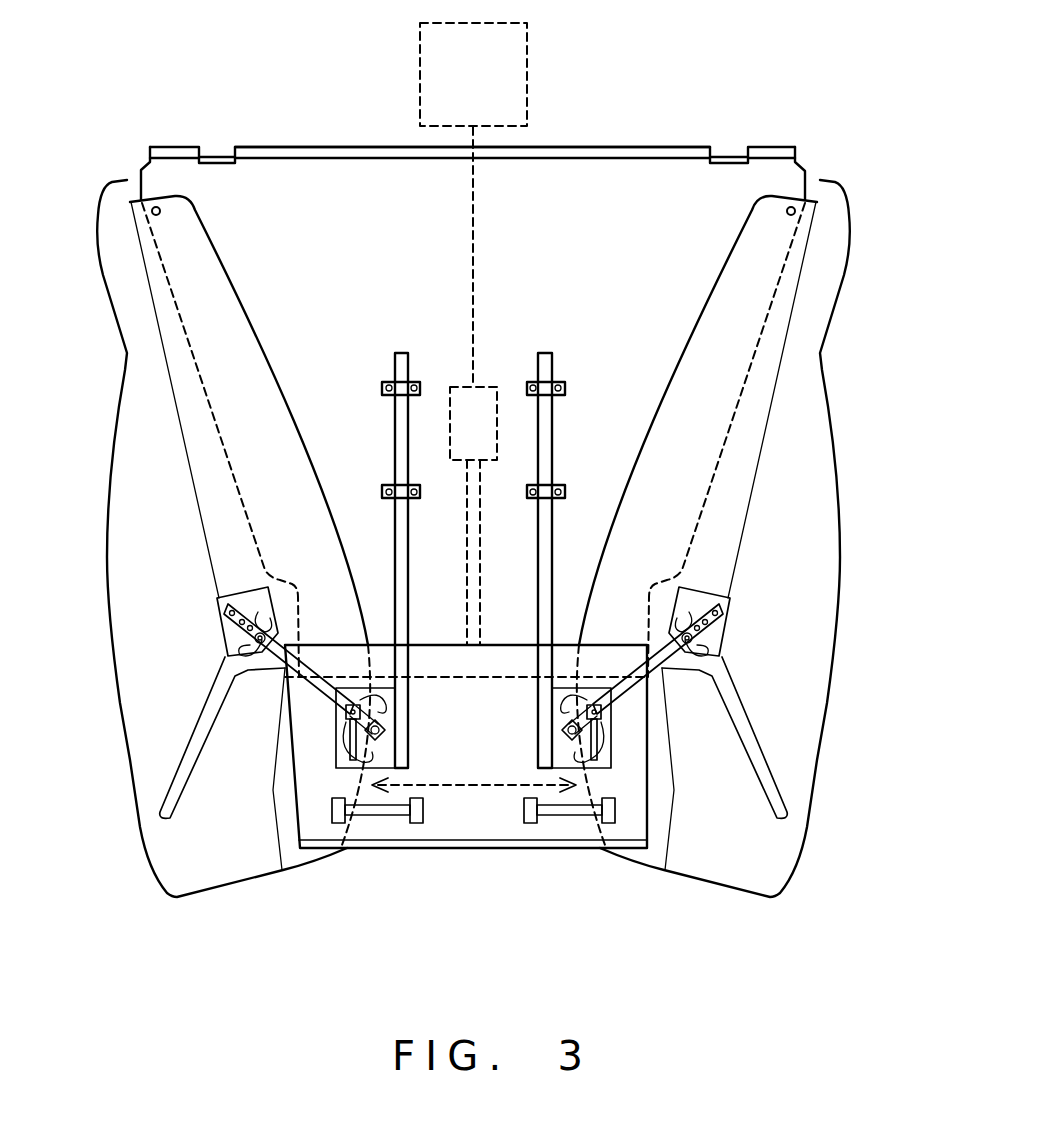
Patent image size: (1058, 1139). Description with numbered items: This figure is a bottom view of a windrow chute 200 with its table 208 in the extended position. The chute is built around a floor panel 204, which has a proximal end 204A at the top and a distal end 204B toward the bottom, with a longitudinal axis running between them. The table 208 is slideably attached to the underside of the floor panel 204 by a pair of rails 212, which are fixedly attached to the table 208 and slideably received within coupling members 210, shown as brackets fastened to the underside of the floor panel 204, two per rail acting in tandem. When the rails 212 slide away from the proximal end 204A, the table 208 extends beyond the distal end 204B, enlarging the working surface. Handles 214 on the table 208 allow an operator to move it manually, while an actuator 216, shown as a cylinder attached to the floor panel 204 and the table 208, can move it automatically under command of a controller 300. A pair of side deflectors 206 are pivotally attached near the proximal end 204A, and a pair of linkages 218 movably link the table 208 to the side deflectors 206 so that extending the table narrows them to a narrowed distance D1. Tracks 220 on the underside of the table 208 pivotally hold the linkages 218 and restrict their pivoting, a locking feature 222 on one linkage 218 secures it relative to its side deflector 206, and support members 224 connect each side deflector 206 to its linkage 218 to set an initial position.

The windrow chute 200 is at (479, 483).
The floor panel 204 is at (446, 136).
The proximal end 204A is at (472, 109).
The distal end 204B is at (475, 696).
The side deflectors 206 is at (479, 538).
The table 208 is at (473, 900).
The coupling member 210 is at (476, 440).
The rail 212 is at (479, 527).
The handle 214 is at (494, 863).
The actuator 216 is at (427, 386).
The linkages 218 is at (478, 650).
The tracks 220 is at (477, 748).
The locking feature 222 is at (404, 766).
The support members 224 is at (476, 737).
The controller 300 is at (473, 74).
The narrowed distance D1 is at (474, 849).